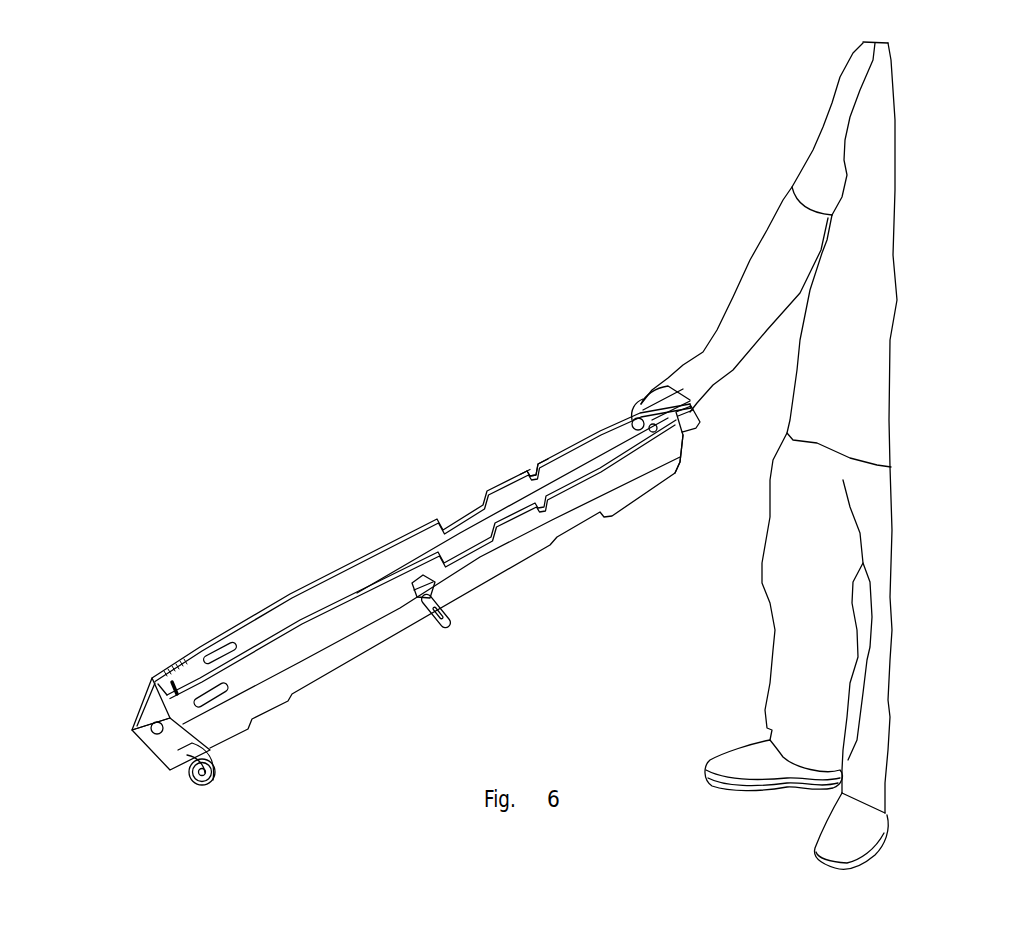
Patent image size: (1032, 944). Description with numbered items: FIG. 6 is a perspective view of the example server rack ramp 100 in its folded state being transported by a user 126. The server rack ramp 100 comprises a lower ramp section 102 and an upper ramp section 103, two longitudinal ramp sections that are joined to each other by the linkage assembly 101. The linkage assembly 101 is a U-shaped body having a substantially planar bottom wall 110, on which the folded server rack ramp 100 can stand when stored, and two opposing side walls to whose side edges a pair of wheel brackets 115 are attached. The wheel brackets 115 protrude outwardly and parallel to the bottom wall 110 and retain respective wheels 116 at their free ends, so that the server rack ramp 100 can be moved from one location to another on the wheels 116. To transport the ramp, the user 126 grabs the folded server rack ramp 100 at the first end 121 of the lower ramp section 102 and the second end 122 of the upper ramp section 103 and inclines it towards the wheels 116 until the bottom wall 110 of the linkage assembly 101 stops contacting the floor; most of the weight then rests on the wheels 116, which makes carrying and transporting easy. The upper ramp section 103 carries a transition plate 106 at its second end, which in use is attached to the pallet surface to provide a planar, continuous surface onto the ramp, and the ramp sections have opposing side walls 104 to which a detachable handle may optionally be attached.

The server rack ramp 100 is at (394, 471).
The linkage assembly 101 is at (132, 679).
The lower ramp section 102 is at (530, 452).
The upper ramp section 103 is at (334, 692).
The side walls 104 is at (288, 594).
The transition plate 106 is at (690, 440).
The bottom wall 110 is at (148, 716).
The wheel brackets 115 is at (190, 765).
The wheels 116 is at (214, 764).
The first end 121 is at (661, 462).
The second end 122 is at (611, 437).
The user 126 is at (875, 262).